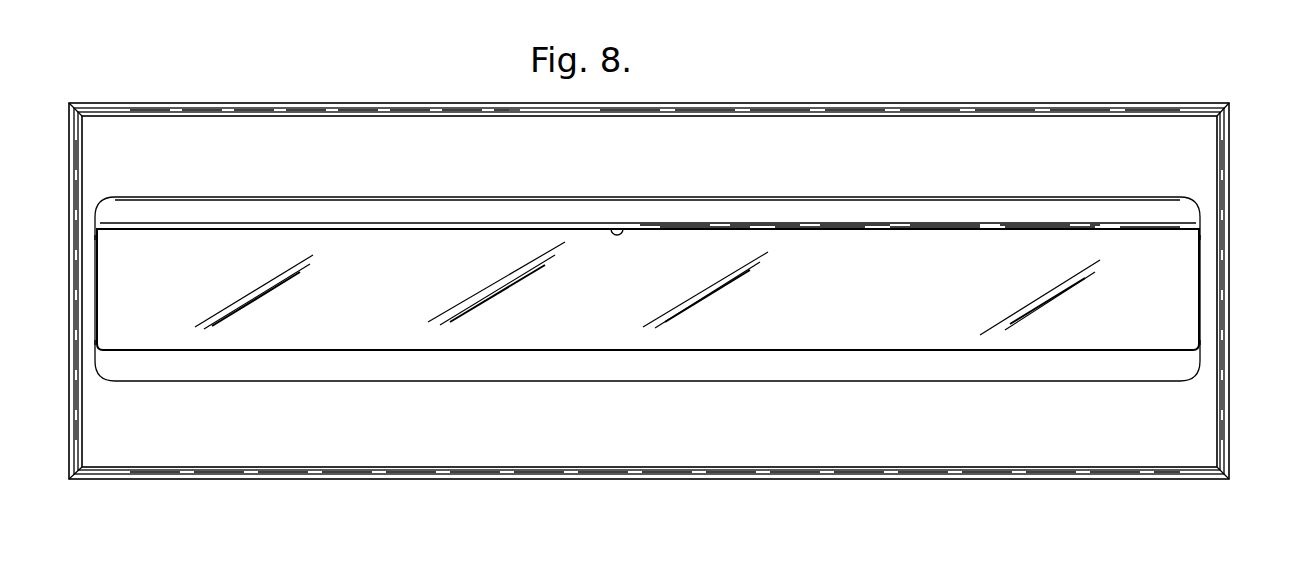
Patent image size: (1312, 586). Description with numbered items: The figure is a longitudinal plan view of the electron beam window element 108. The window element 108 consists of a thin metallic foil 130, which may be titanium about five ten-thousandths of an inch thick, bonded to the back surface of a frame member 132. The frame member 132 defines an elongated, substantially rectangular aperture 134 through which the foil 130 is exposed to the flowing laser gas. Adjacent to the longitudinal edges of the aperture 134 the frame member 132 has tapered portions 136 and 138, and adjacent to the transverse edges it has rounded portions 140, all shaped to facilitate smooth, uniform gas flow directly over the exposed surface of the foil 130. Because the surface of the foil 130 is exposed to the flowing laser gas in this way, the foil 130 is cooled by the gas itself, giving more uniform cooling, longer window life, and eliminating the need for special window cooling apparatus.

The electron beam window element 108 is at (653, 266).
The metallic foil 130 is at (897, 288).
The frame member 132 is at (917, 123).
The aperture 134 is at (625, 230).
The tapered portion 136 is at (742, 368).
The tapered portion 138 is at (485, 210).
The rounded portion 140 is at (92, 310).